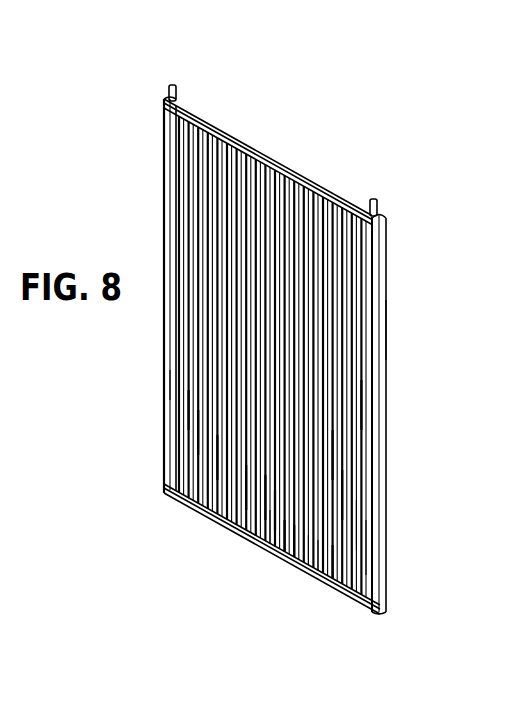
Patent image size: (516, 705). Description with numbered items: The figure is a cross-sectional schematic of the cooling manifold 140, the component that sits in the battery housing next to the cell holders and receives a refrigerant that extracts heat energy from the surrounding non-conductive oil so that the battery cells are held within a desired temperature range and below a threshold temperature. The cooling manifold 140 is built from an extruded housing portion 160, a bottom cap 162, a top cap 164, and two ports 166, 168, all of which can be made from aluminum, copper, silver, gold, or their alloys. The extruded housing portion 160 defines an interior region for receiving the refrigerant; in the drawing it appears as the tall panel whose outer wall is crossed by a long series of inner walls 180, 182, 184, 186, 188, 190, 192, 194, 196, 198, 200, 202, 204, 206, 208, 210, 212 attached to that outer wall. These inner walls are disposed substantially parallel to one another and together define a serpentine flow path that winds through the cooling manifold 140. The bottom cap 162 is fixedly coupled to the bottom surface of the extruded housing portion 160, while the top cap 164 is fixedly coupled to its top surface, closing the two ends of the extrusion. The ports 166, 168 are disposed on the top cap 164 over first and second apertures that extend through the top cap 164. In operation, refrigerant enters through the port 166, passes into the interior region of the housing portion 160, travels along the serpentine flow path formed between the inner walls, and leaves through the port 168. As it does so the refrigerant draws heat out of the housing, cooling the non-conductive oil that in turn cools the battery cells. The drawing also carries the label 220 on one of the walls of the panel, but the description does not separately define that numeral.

The cooling manifold 140 is at (358, 114).
The extruded housing portion 160 is at (388, 330).
The bottom cap 162 is at (375, 604).
The top cap 164 is at (268, 156).
The port 166 is at (372, 200).
The port 168 is at (173, 85).
The inner wall 180 is at (366, 550).
The inner wall 182 is at (354, 525).
The inner wall 184 is at (344, 497).
The inner wall 186 is at (333, 458).
The inner wall 188 is at (330, 571).
The inner wall 190 is at (320, 566).
The inner wall 192 is at (310, 563).
The inner wall 194 is at (297, 553).
The inner wall 196 is at (287, 548).
The inner wall 198 is at (272, 536).
The inner wall 200 is at (278, 513).
The inner wall 202 is at (265, 502).
The inner wall 204 is at (248, 492).
The inner wall 206 is at (223, 459).
The inner wall 208 is at (203, 429).
The inner wall 210 is at (192, 405).
The inner wall 212 is at (167, 383).
The bar 220 is at (360, 403).